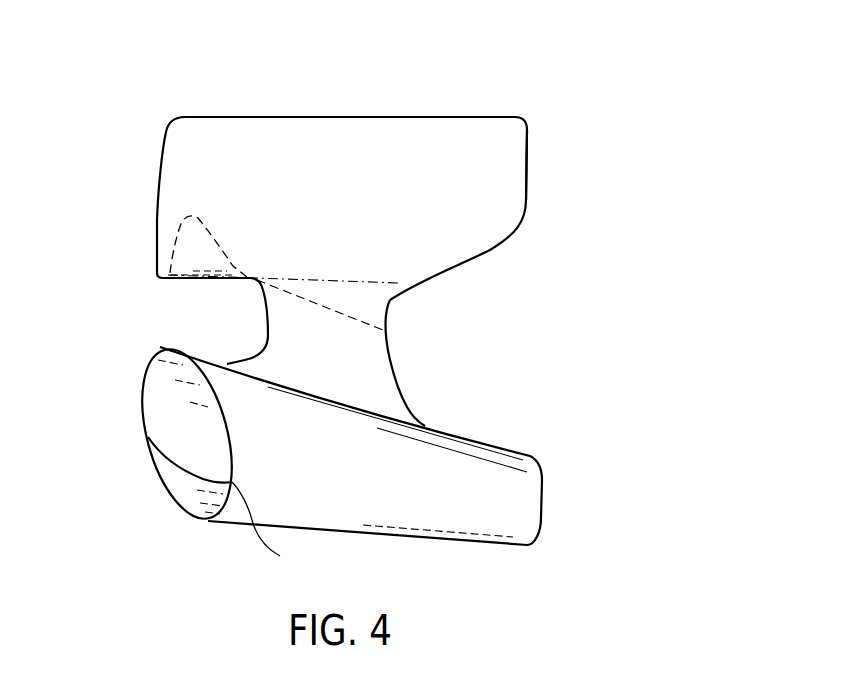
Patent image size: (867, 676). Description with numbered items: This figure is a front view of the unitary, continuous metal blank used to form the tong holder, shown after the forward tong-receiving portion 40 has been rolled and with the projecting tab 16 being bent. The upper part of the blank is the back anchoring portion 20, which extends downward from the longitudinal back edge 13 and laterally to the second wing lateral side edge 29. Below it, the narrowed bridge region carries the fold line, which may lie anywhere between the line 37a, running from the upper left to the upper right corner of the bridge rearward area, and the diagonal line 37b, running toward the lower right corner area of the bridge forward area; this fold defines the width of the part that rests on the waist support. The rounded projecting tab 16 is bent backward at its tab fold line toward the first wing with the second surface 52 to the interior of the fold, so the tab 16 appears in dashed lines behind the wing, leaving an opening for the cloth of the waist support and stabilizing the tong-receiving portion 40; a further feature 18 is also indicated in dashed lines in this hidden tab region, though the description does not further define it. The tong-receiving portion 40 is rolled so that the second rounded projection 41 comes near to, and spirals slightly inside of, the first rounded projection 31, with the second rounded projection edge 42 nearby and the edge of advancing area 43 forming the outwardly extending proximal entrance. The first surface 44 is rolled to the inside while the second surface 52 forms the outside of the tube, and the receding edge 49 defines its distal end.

The longitudinal back edge 13 is at (407, 117).
The projecting tab 16 is at (193, 228).
The inner wall 18 is at (170, 253).
The back anchoring portion 20 is at (617, 202).
The second wing lateral side edge 29 is at (527, 163).
The first rounded projection 31 is at (202, 279).
The fold line 37a is at (337, 282).
The fold line 37b is at (340, 312).
The forward tong-receiving portion 40 is at (595, 508).
The second rounded projection 41 is at (178, 467).
The second rounded projection edge 42 is at (205, 520).
The edge of advancing area 43 is at (270, 525).
The first surface 44 is at (331, 204).
The receding edge 49 is at (543, 480).
The second surface 52 is at (397, 500).